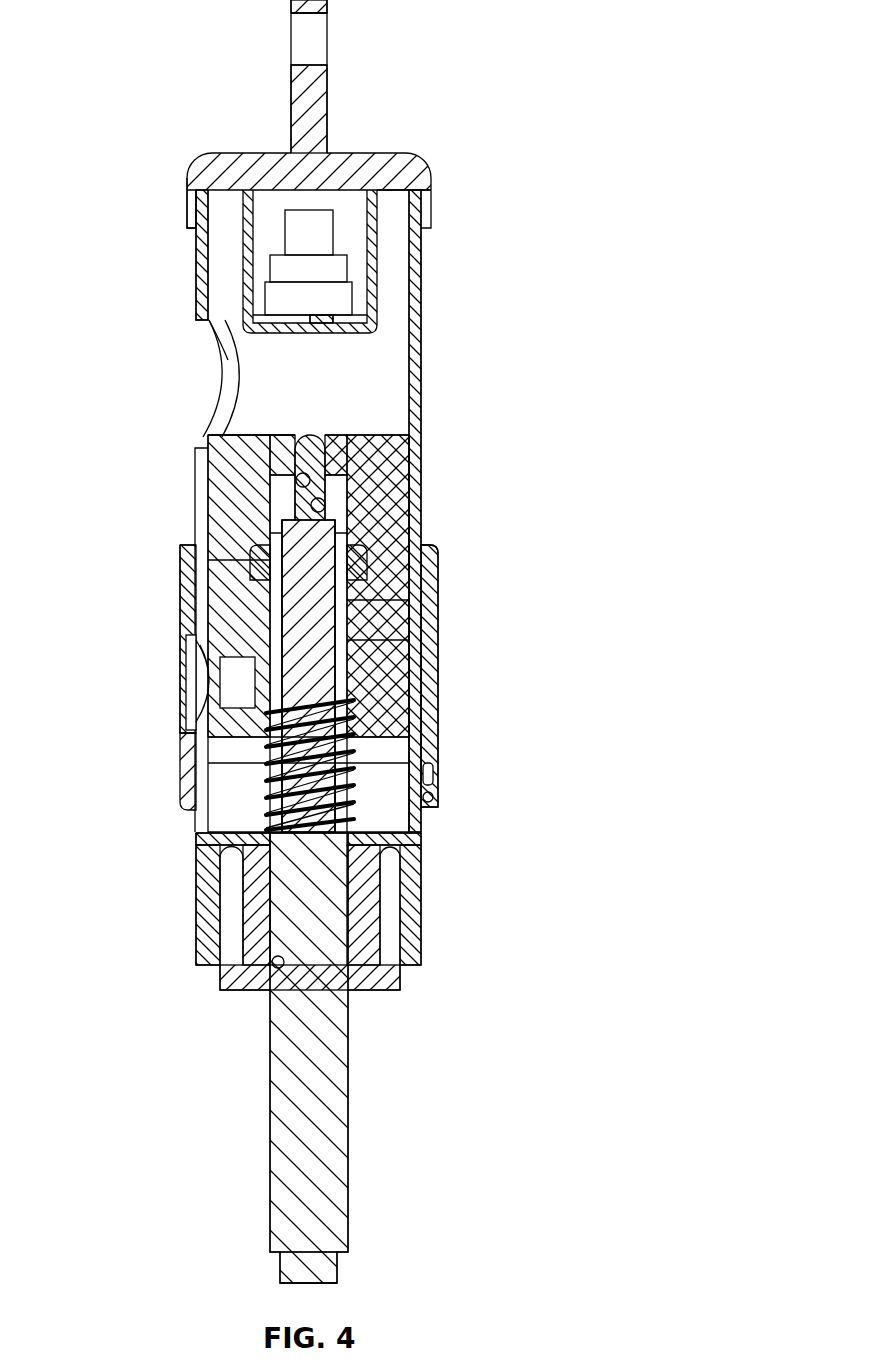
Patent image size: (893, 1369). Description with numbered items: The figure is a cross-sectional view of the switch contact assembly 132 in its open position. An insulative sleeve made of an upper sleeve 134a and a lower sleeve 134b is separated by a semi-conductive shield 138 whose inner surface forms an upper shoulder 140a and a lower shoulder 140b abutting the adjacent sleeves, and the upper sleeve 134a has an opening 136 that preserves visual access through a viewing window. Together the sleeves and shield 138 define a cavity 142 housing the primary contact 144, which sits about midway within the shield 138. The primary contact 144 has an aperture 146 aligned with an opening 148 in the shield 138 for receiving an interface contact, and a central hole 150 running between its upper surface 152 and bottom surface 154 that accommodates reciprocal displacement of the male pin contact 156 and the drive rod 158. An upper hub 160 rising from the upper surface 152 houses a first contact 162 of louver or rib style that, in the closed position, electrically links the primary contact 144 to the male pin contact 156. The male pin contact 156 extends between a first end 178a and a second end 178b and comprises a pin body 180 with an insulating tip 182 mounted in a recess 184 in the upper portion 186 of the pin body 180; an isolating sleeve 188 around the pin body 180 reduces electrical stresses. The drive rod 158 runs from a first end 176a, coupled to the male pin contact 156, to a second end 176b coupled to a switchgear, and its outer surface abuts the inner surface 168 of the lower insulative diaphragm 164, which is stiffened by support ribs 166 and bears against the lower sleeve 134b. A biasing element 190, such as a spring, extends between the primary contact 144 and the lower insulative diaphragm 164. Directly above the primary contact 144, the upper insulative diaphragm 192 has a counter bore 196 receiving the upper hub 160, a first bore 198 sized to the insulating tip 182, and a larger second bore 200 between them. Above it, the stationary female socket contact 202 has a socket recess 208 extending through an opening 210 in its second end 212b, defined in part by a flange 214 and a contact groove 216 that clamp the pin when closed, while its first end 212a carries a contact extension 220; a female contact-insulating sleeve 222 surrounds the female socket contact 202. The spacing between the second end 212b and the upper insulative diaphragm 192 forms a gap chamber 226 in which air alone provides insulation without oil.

The switch contact assembly 132 is at (486, 114).
The upper sleeve 134a is at (328, 230).
The lower sleeve 134b is at (417, 813).
The opening 136 is at (214, 385).
The shield 138 is at (427, 690).
The upper shoulder 140a is at (430, 605).
The lower shoulder 140b is at (426, 764).
The cavity 142 is at (398, 430).
The primary contact 144 is at (405, 660).
The aperture 146 is at (232, 700).
The opening 148 is at (200, 668).
The central hole 150 is at (198, 648).
The upper surface 152 is at (197, 580).
The bottom surface 154 is at (192, 760).
The male pin contact 156 is at (400, 610).
The drive rod 158 is at (340, 1140).
The upper hub 160 is at (220, 555).
The first contact 162 is at (405, 540).
The lower insulative diaphragm 164 is at (405, 880).
The support ribs 166 is at (395, 918).
The inner surface 168 is at (272, 962).
The first end 176a is at (267, 790).
The second end 176b is at (315, 1284).
The first end 178a is at (312, 435).
The second end 178b is at (400, 748).
The pin body 180 is at (265, 592).
The insulating tip 182 is at (360, 436).
The recess 184 is at (340, 480).
The upper portion 186 is at (355, 500).
The isolating sleeve 188 is at (348, 625).
The biasing element 190 is at (430, 800).
The upper insulative diaphragm 192 is at (188, 560).
The counter bore 196 is at (425, 555).
The first bore 198 is at (212, 430).
The second bore 200 is at (232, 468).
The female socket contact 202 is at (415, 173).
The socket recess 208 is at (385, 205).
The opening 210 is at (335, 348).
The first end 212a is at (332, 5).
The second end 212b is at (222, 325).
The flange 214 is at (262, 300).
The contact groove 216 is at (350, 285).
The contact extension 220 is at (318, 92).
The female contact-insulating sleeve 222 is at (248, 222).
The gap chamber 226 is at (363, 378).